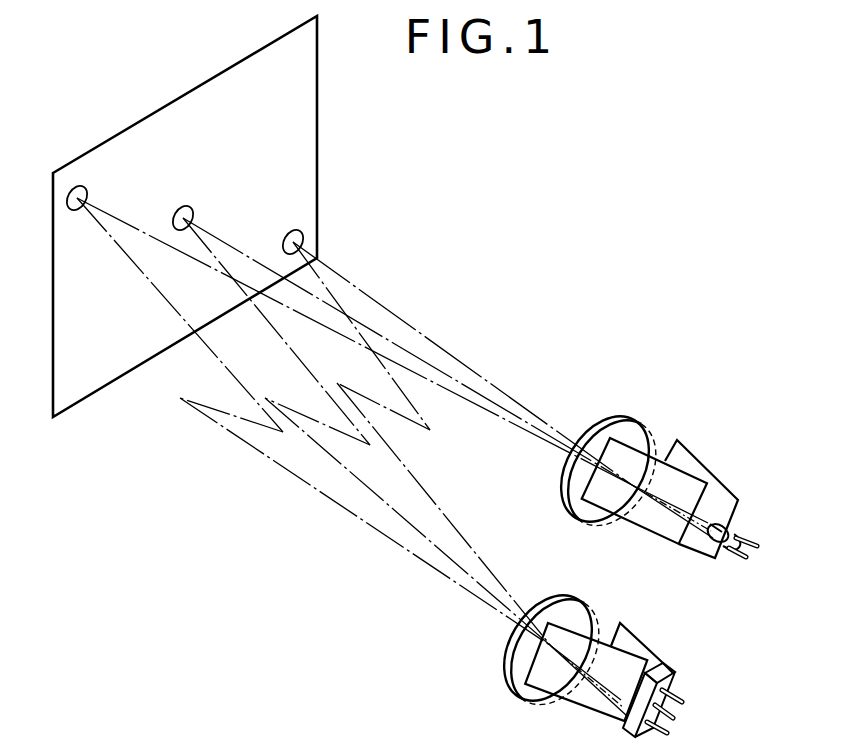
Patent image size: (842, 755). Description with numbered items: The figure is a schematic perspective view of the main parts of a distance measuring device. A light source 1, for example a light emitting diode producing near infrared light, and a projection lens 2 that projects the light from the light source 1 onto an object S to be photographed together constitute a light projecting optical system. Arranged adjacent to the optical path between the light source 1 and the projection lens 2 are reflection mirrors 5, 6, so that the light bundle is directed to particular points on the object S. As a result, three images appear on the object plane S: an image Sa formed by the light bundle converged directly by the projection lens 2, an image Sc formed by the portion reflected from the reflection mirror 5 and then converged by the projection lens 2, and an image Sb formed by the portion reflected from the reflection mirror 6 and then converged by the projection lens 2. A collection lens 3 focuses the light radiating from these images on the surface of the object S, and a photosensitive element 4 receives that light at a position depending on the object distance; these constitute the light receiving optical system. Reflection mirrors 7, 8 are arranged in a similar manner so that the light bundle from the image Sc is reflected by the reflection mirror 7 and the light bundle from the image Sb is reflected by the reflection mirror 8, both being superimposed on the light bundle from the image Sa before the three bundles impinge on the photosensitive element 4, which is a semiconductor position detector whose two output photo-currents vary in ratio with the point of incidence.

The object S is at (105, 378).
The image Sa is at (182, 206).
The image Sb is at (76, 186).
The image Sc is at (299, 231).
The light source 1 is at (738, 528).
The projection lens 2 is at (648, 432).
The collection lens 3 is at (506, 673).
The photosensitive element 4 is at (676, 678).
The reflection mirror 5 is at (640, 524).
The reflection mirror 6 is at (728, 490).
The reflection mirror 7 is at (577, 698).
The reflection mirror 8 is at (630, 638).